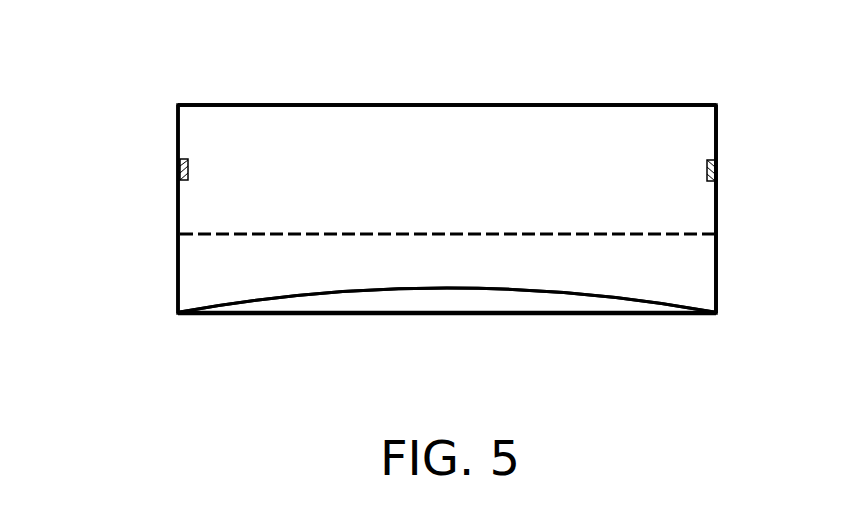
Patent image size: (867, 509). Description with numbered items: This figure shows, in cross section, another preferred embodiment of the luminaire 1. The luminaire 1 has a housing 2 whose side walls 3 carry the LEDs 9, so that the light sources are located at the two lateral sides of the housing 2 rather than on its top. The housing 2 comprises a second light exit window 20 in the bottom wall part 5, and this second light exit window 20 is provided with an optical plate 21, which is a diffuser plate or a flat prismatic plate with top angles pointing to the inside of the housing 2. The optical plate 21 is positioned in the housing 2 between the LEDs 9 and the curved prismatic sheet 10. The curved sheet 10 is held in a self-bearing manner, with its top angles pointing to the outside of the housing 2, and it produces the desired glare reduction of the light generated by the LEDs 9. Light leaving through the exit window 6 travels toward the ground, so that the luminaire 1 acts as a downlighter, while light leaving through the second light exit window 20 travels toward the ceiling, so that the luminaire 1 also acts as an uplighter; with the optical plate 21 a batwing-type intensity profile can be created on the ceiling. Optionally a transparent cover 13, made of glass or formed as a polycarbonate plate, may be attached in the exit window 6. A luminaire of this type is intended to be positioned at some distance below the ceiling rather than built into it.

The luminaire 1 is at (145, 80).
The housing 2 is at (728, 91).
The side walls 3 is at (177, 263).
The bottom wall part 5 is at (353, 93).
The exit window 6 is at (375, 303).
The LEDs 9 is at (178, 173).
The curved prismatic sheet 10 is at (445, 288).
The transparent cover 13 is at (602, 316).
The second light exit window 20 is at (484, 89).
The optical plate 21 is at (560, 234).